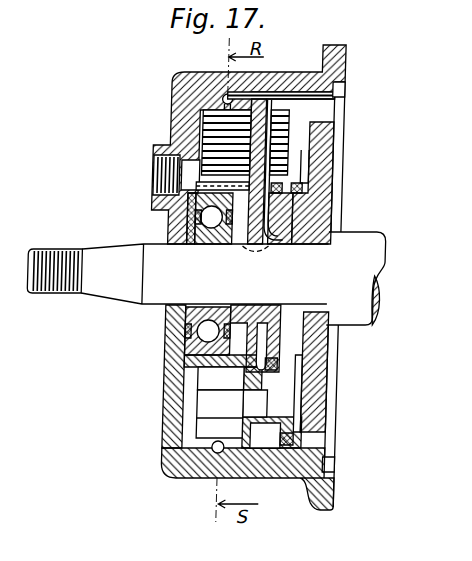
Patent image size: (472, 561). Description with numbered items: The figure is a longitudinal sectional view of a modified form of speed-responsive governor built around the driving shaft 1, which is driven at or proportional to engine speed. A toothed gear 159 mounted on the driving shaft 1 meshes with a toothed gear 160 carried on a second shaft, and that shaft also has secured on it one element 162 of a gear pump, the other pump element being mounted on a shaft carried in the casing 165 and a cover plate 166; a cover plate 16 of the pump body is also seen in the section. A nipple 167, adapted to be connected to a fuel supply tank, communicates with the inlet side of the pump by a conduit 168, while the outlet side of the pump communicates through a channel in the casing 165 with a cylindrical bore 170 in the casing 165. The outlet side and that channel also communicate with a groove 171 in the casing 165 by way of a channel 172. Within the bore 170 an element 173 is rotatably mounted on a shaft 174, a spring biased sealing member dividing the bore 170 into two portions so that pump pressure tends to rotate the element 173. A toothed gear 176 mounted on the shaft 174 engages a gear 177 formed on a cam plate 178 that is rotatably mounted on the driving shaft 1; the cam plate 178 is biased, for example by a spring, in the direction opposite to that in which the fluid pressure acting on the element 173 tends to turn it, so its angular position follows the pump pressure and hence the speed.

The driving shaft 1 is at (102, 288).
The rear cover plate 16 is at (261, 133).
The toothed gear 159 is at (271, 218).
The toothed gear 160 is at (281, 127).
The pump element 162 is at (228, 130).
The casing 165 is at (168, 352).
The cover plate 166 is at (295, 377).
The nipple 167 is at (156, 173).
The conduit 168 is at (194, 175).
The cylindrical bore 170 is at (261, 478).
The groove 171 is at (330, 92).
The channel 172 is at (282, 93).
The element 173 is at (210, 380).
The shaft 174 is at (206, 405).
The toothed gear 176 is at (290, 417).
The gear 177 is at (300, 352).
The cam plate 178 is at (319, 163).